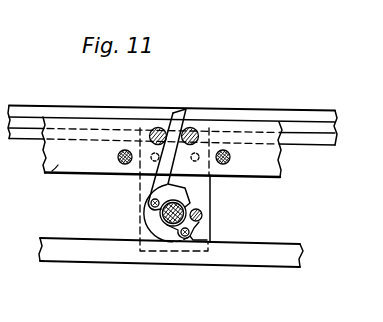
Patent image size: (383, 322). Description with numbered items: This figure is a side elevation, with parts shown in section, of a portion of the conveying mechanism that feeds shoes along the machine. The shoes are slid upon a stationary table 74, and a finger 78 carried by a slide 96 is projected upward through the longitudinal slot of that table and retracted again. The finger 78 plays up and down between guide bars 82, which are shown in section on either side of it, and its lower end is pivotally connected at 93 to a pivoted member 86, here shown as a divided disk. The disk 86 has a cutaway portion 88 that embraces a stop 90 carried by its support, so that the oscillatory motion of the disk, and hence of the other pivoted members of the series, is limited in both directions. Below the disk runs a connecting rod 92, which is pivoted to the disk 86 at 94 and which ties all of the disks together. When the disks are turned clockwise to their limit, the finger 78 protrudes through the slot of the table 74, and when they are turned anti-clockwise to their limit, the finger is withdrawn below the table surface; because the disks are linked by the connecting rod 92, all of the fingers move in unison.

The stationary table 74 is at (284, 110).
The fingers 78 is at (183, 112).
The guide bars 82 is at (157, 127).
The pivoted member (divided disk) 86 is at (153, 220).
The cutaway portion 88 is at (197, 204).
The stop 90 is at (202, 215).
The connecting rod 92 is at (252, 258).
The pivotal connection of finger to member 93 is at (150, 201).
The pivot of connecting rod 94 is at (186, 237).
The slide 96 is at (44, 174).